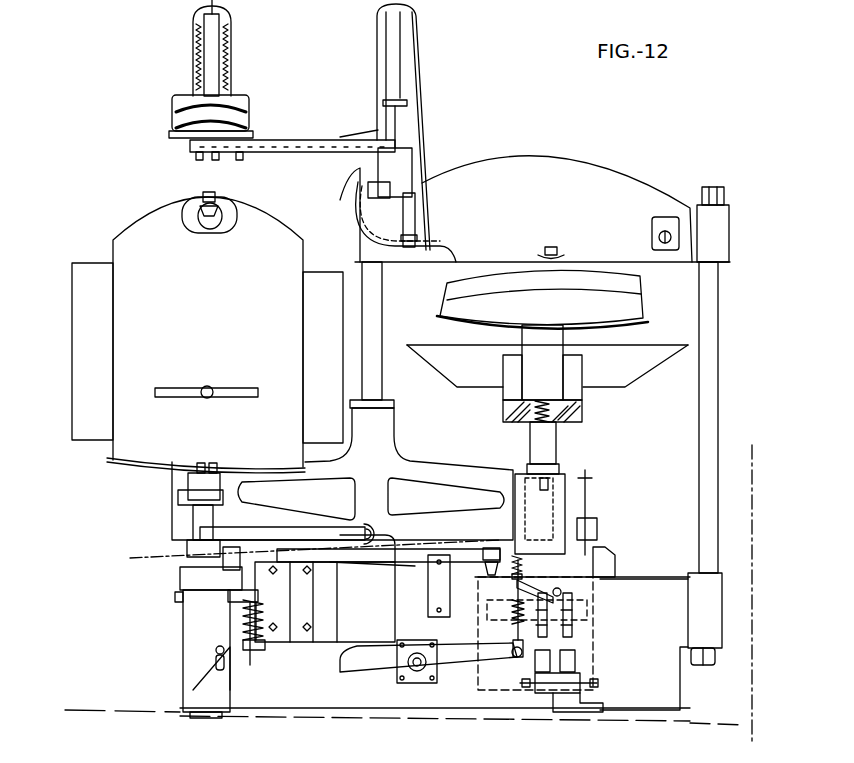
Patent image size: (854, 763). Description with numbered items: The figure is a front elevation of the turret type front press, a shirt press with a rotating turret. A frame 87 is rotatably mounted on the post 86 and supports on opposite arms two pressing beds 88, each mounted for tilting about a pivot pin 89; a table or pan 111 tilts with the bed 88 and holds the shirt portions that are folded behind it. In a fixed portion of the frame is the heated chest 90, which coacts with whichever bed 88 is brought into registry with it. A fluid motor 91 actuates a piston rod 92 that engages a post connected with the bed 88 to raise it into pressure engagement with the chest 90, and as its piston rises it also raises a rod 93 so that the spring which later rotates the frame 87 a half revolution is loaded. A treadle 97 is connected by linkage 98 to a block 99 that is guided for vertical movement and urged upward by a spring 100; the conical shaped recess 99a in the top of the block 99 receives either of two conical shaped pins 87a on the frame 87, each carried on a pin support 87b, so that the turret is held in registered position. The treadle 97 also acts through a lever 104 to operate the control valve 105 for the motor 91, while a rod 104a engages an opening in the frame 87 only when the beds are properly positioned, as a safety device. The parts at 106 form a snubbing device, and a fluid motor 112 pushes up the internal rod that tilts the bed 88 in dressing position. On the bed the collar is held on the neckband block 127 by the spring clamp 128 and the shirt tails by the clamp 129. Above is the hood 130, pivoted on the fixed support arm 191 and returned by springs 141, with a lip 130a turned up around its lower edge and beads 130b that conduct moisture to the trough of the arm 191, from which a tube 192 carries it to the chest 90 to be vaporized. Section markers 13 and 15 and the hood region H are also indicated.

The springs 141 is at (207, 37).
The hood 130 is at (249, 101).
The lip 130a is at (253, 134).
The beads 130b is at (176, 125).
The support arm 191 is at (298, 152).
The tube 192 is at (372, 190).
The neckband block 127 is at (188, 198).
The spring clamp 128 is at (217, 230).
The table or pan 111 is at (90, 268).
The pressing bed 88 is at (633, 318).
The clamp 129 is at (168, 388).
The post 86 is at (382, 302).
The heated chest 90 is at (637, 283).
The pivot pin 89 is at (590, 380).
The frame 87 is at (393, 460).
The conical shaped pins 87a is at (253, 547).
The pin support 87b is at (488, 580).
The snubbing device 106 is at (447, 560).
The rod 93 is at (590, 495).
The piston rod 92 is at (547, 558).
The conical shaped recess 99a is at (233, 577).
The block 99 is at (230, 603).
The linkage 98 is at (233, 617).
The spring 100 is at (237, 632).
The fluid motor 112 is at (187, 663).
The treadle 97 is at (233, 652).
The lever 104 is at (465, 662).
The rod 104a is at (345, 650).
The control valve 105 is at (567, 697).
The fluid motor 91 is at (592, 645).
The section line 13 is at (758, 461).
The section line 15 is at (149, 551).
The hood H is at (568, 130).